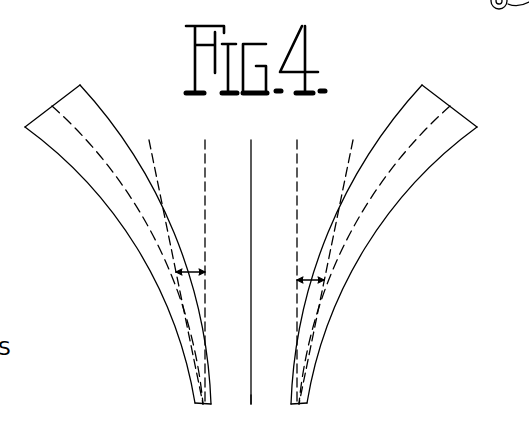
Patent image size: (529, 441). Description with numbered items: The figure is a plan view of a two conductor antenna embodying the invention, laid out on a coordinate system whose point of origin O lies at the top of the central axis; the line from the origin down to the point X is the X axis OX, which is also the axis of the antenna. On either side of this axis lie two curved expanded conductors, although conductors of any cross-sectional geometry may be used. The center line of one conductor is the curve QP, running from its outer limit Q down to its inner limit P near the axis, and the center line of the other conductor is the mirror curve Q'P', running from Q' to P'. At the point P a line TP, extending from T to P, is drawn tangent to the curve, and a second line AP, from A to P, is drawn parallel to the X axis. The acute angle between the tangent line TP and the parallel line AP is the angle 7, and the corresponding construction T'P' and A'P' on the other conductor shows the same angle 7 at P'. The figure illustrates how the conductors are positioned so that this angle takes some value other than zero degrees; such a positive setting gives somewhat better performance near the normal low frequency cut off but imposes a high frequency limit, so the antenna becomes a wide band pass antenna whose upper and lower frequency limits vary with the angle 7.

The limit of the second conductor center line Q' is at (118, 244).
The limit of the second conductor center line P' is at (204, 417).
The tangent line point for the second conductor T' is at (171, 261).
The line parallel to the axis through P' A' is at (203, 261).
The point of origin O is at (251, 261).
The X axis X is at (250, 413).
The limit of the curve Q is at (384, 244).
The limit of the curve P is at (299, 417).
The tangent line T is at (329, 261).
The line parallel to the X axis A is at (295, 261).
The τ angle 7 is at (186, 250).